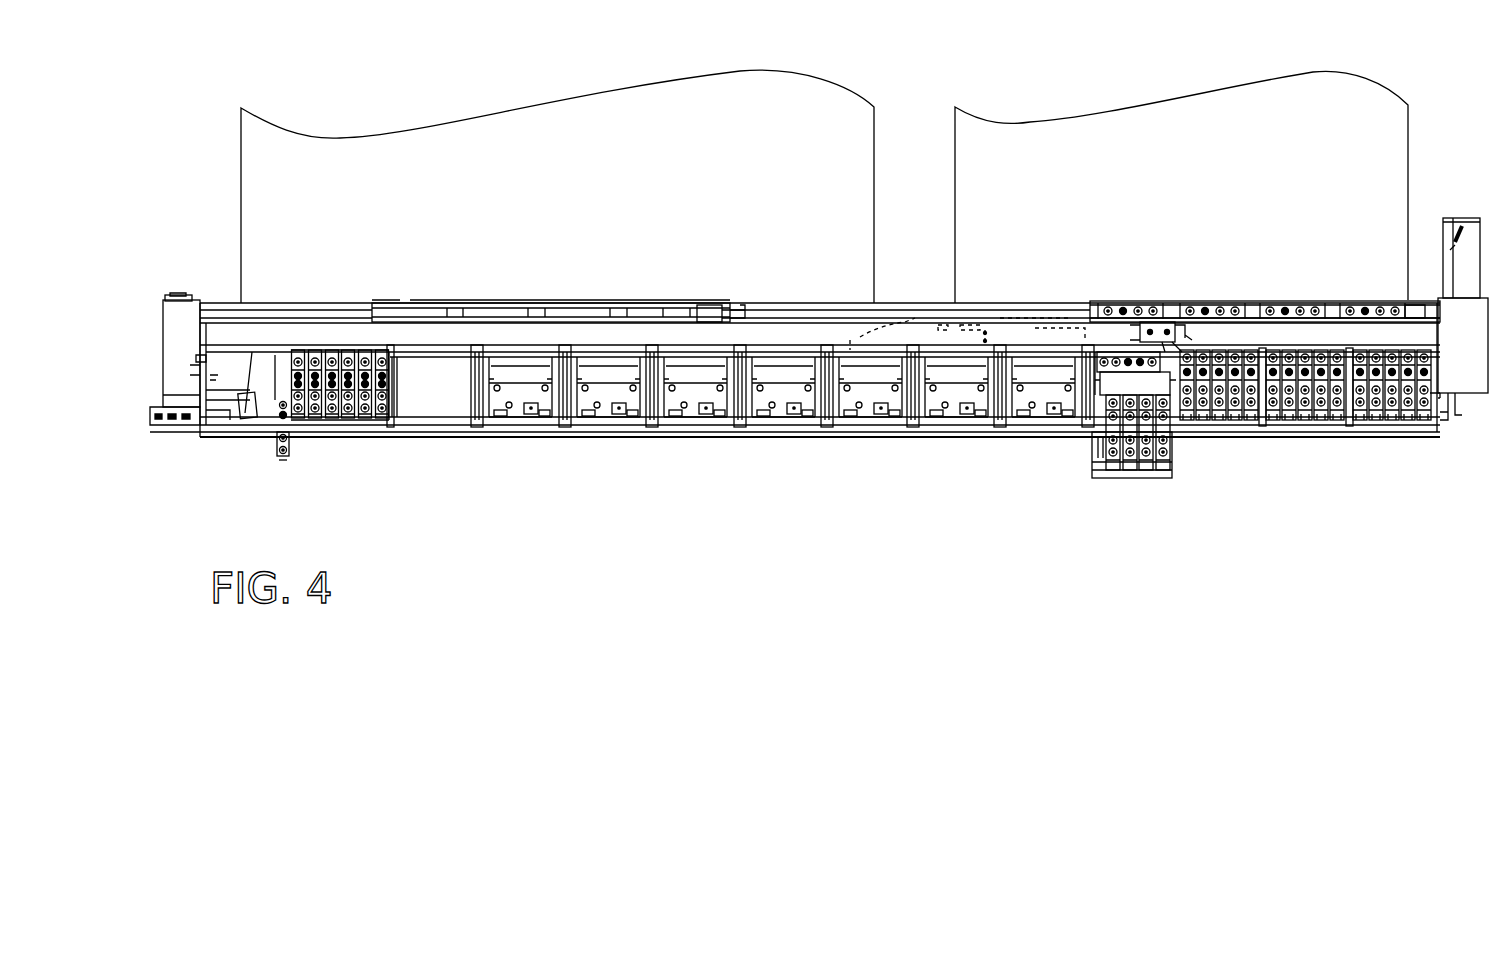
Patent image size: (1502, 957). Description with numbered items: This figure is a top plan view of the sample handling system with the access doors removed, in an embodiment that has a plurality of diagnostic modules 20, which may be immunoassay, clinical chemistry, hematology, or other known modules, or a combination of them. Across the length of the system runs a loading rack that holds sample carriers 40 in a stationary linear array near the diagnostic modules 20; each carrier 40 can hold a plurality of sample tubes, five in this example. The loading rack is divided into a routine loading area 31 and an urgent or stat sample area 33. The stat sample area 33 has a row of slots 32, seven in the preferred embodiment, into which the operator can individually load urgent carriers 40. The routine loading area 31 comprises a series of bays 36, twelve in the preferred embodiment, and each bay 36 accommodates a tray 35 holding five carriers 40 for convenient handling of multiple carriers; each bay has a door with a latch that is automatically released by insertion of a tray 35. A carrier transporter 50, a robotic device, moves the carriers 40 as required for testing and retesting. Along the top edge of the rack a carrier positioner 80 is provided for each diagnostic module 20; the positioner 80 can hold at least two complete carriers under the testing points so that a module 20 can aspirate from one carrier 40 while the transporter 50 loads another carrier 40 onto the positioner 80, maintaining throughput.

The diagnostic module 20 is at (376, 155).
The routine loading area 31 is at (766, 436).
The slot 32 is at (382, 433).
The urgent or stat sample area 33 is at (314, 439).
The tray 35 is at (1133, 479).
The bay 36 is at (521, 433).
The carrier 40 is at (272, 443).
The carrier transporter 50 is at (1162, 330).
The carrier positioner 80 is at (580, 296).